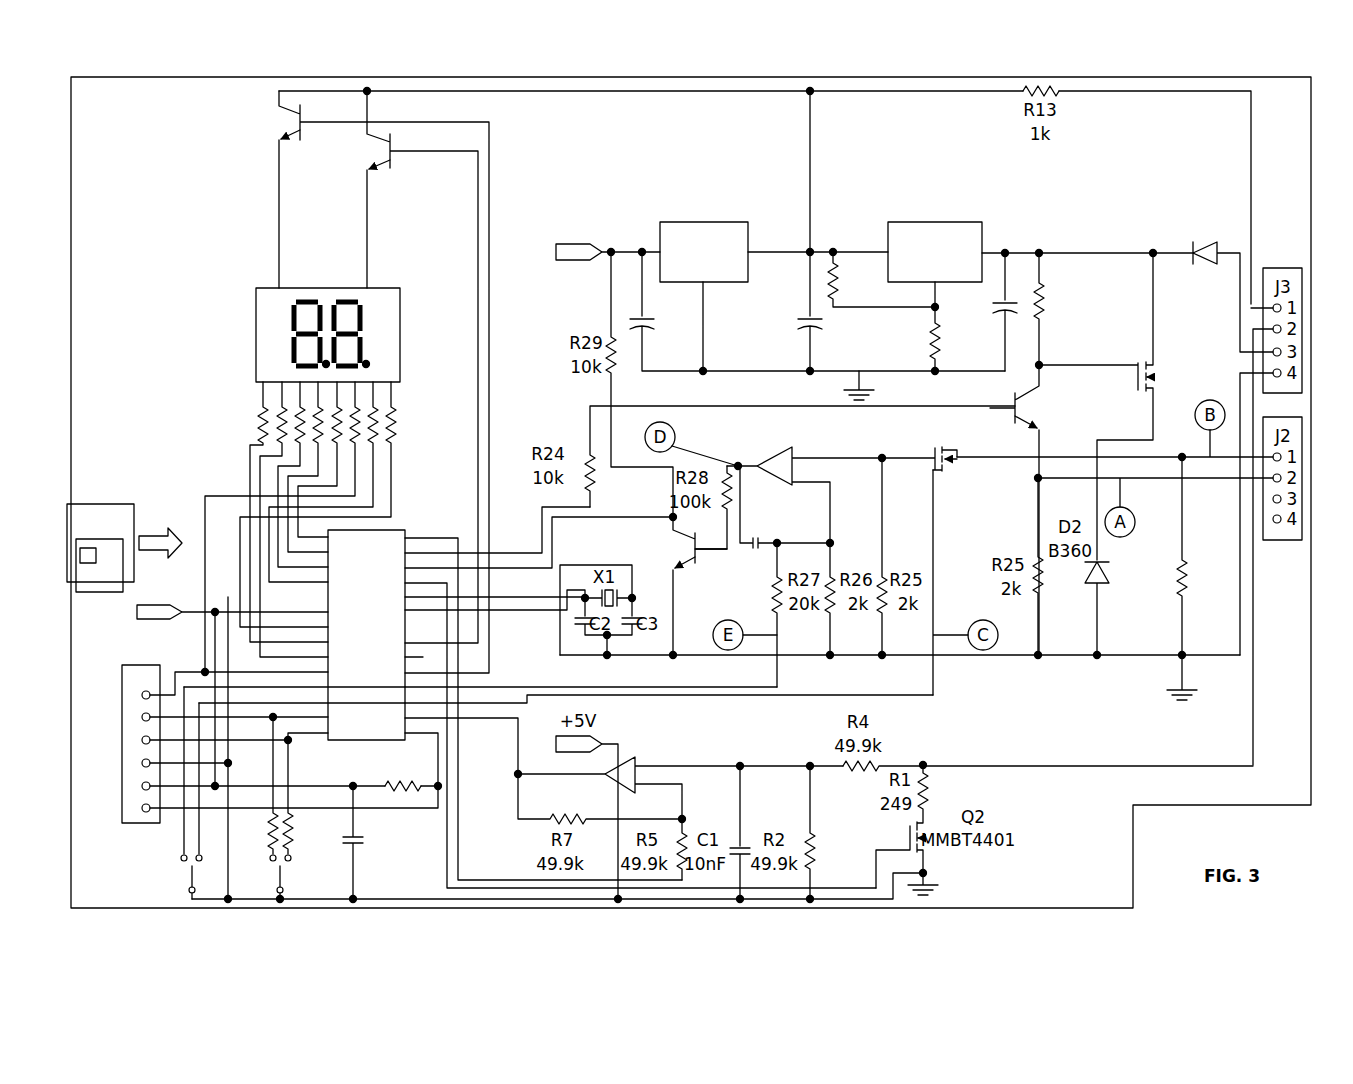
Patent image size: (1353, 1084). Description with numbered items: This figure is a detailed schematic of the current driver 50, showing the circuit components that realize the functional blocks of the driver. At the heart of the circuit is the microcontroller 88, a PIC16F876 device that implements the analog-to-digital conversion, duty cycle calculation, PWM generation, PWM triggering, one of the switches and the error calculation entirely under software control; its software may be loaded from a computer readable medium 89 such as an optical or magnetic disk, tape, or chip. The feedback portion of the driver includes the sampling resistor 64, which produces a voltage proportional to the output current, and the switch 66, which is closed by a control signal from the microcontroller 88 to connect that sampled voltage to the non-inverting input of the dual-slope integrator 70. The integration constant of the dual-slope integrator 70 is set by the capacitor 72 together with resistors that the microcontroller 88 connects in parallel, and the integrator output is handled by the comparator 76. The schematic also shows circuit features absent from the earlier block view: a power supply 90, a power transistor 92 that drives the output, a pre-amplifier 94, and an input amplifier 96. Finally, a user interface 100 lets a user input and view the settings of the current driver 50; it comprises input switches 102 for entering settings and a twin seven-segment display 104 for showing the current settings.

The current driver 50 is at (1311, 153).
The sampling resistor 64 is at (1196, 562).
The switch 66 is at (948, 455).
The dual-slope integrator 70 is at (770, 450).
The capacitor 72 is at (757, 560).
The comparator 76 is at (702, 577).
The microcontroller 88 is at (376, 655).
The computer readable medium 89 is at (107, 530).
The power supply 90 is at (775, 203).
The power transistor 92 is at (1141, 352).
The pre-amplifier 94 is at (1008, 420).
The input amplifier 96 is at (603, 787).
The user interface 100 is at (130, 858).
The input switches 102 is at (178, 882).
The twin seven-segment display 104 is at (256, 341).